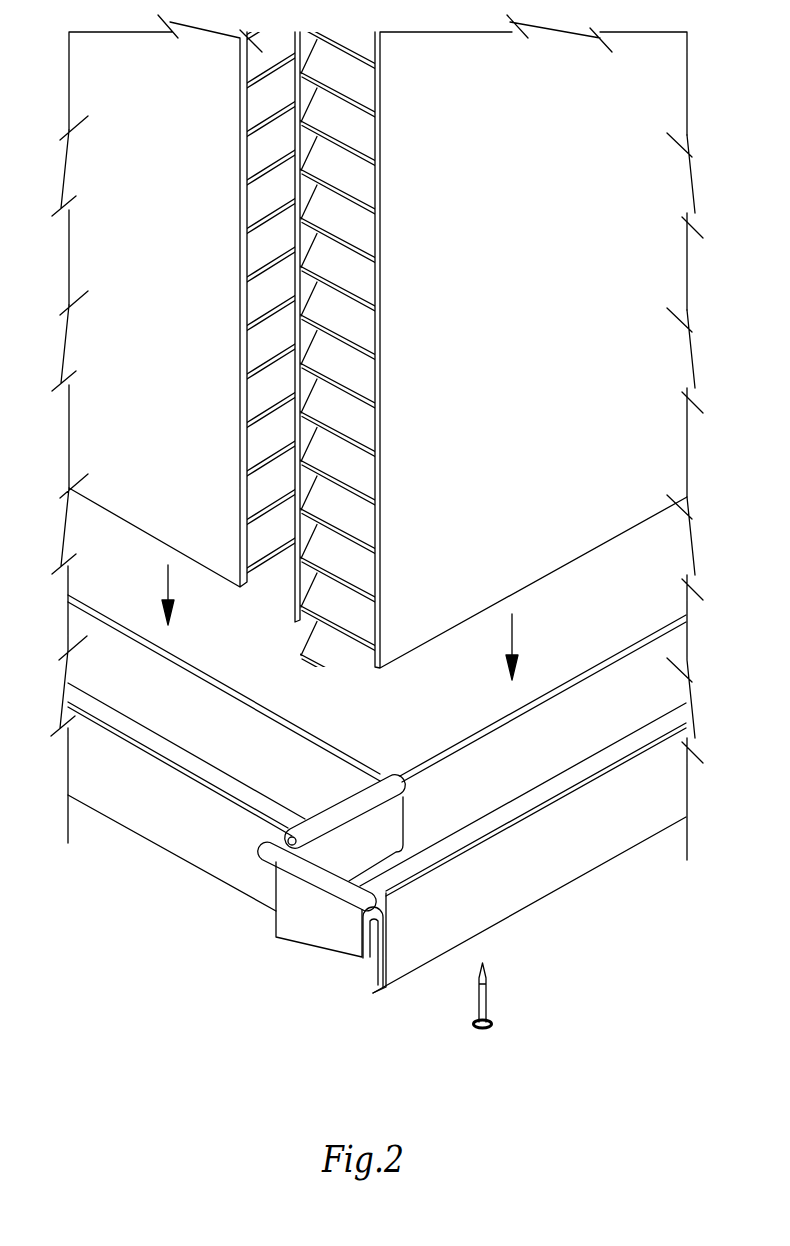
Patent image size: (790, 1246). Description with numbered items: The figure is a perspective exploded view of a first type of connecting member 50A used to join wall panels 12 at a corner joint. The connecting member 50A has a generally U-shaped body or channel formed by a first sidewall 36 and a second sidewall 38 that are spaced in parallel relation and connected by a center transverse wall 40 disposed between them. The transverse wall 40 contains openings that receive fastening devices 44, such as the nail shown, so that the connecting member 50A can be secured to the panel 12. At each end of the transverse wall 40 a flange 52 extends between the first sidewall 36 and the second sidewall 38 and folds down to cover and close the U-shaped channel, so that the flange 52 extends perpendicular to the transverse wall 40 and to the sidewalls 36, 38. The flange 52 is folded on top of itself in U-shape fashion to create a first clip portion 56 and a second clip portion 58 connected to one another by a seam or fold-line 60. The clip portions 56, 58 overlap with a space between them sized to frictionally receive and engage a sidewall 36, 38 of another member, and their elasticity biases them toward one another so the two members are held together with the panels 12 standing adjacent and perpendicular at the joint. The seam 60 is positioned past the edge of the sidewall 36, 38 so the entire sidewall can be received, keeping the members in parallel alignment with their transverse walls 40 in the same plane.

The panel 12 is at (166, 289).
The first sidewall 36 is at (178, 831).
The second sidewall 38 is at (206, 734).
The center transverse wall 40 is at (78, 694).
The fastening device 44 is at (488, 995).
The first type of connecting member 50A is at (377, 733).
The flange 52 is at (327, 875).
The first clip portion 56 is at (373, 975).
The second clip portion 58 is at (406, 800).
The seam or fold-line 60 is at (381, 784).